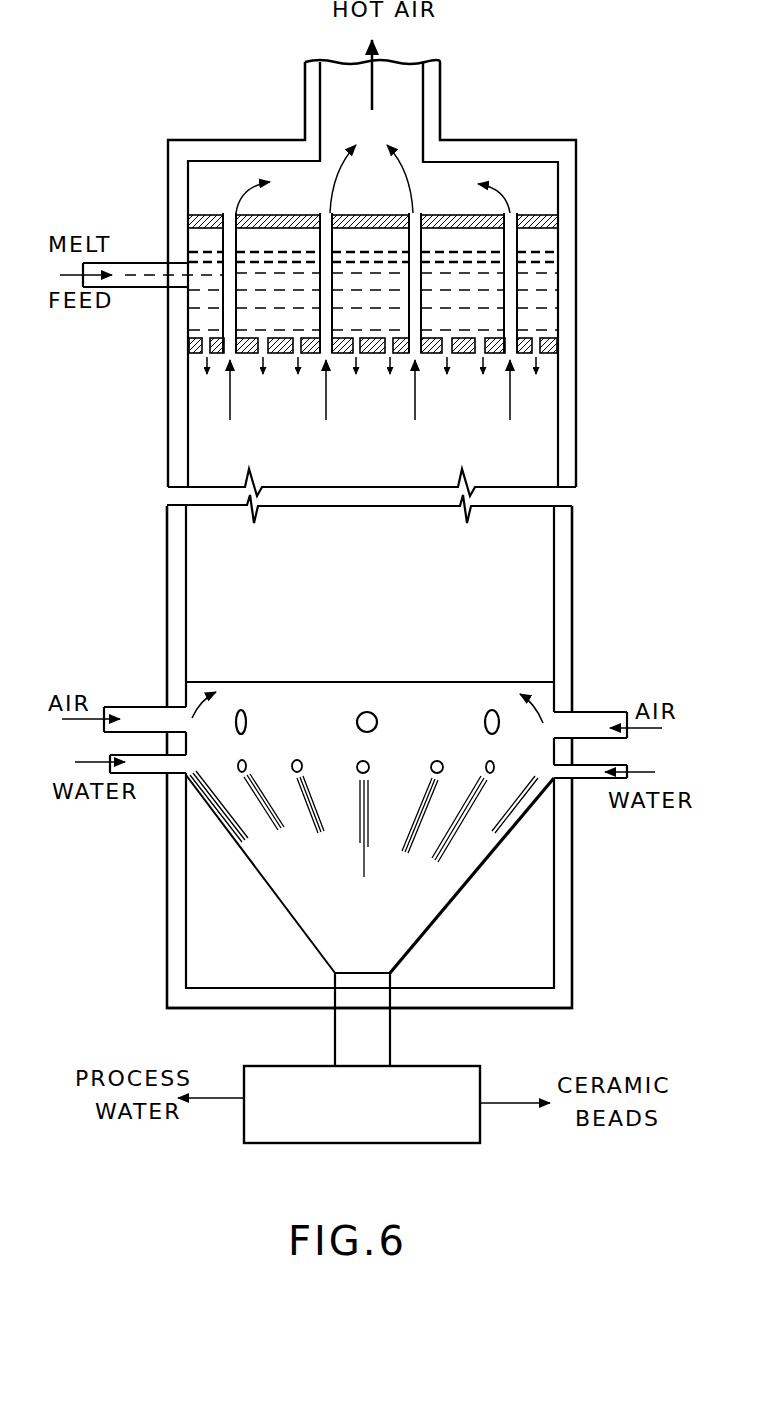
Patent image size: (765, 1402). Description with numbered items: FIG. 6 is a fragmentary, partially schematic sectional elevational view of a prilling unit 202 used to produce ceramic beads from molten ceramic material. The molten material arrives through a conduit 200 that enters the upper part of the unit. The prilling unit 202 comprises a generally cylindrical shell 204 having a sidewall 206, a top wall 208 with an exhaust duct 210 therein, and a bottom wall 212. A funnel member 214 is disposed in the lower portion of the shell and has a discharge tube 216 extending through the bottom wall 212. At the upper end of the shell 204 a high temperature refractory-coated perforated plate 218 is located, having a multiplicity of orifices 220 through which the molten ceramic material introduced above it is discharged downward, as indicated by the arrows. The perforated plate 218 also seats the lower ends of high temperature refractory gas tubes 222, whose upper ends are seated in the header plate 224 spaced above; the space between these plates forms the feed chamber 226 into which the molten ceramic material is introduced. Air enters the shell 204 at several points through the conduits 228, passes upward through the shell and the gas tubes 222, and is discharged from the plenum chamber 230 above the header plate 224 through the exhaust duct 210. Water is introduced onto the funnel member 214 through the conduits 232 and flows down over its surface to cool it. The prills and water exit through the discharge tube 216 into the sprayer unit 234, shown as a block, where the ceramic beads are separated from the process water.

The conduit 200 is at (135, 263).
The prilling unit 202 is at (555, 139).
The shell 204 is at (576, 601).
The sidewall 206 is at (569, 554).
The top wall 208 is at (504, 140).
The exhaust duct 210 is at (441, 77).
The bottom wall 212 is at (247, 1012).
The funnel member 214 is at (275, 895).
The discharge tube 216 is at (390, 1045).
The perforated plate 218 is at (197, 352).
The orifices 220 is at (532, 346).
The gas tubes 222 is at (230, 313).
The header plate 224 is at (540, 216).
The feed chamber 226 is at (550, 290).
The conduits 228 is at (140, 707).
The plenum chamber 230 is at (391, 204).
The conduits 232 is at (157, 779).
The sprayer unit 234 is at (312, 1147).